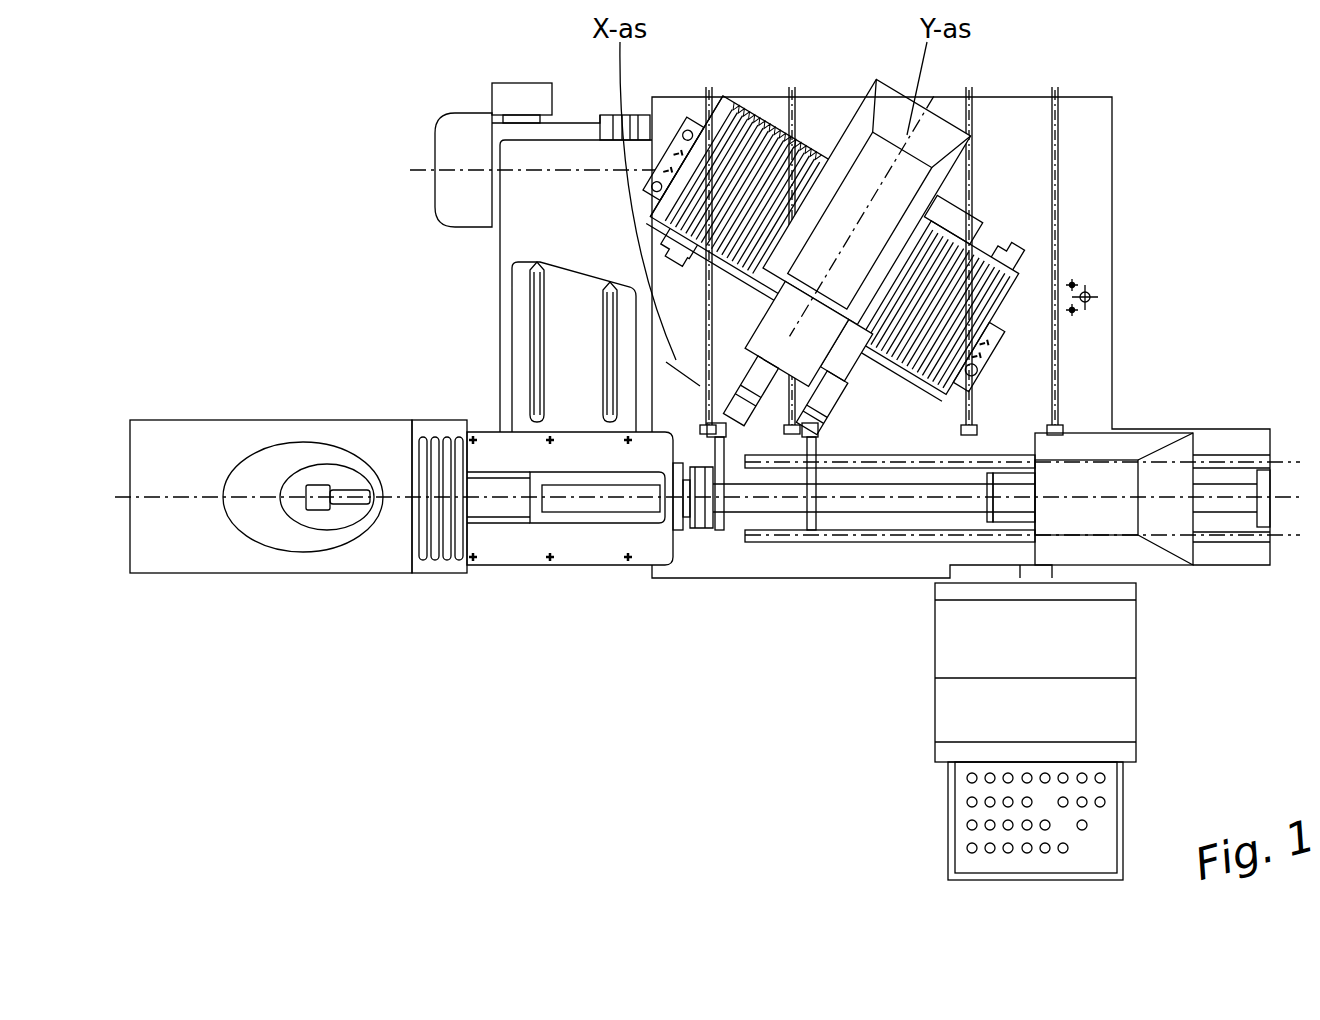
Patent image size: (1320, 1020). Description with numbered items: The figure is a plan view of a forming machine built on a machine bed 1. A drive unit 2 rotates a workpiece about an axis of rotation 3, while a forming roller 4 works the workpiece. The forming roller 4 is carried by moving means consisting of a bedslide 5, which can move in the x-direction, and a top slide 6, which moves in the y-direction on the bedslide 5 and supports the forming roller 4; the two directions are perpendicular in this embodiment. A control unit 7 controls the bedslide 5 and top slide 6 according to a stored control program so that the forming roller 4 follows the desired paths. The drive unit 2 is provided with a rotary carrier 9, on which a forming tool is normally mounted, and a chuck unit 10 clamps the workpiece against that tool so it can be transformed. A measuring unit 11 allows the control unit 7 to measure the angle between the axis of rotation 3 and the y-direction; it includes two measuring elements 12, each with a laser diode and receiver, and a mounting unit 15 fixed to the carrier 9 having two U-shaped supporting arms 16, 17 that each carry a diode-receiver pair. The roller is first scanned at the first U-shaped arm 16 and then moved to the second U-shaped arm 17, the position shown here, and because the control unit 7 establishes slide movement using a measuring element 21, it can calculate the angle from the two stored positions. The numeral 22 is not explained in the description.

The frame 1 is at (1093, 108).
The slide column 2 is at (497, 548).
The drive unit 3 is at (200, 497).
The guide rods 4 is at (735, 390).
The motor 5 is at (750, 118).
The slide housing 6 is at (887, 100).
The drive motor 7 is at (935, 722).
The support post 9 is at (695, 490).
The bearing block 10 is at (1183, 540).
The spindle shaft 11 is at (740, 507).
The support post 12 is at (802, 445).
The spindle axis 15 is at (763, 498).
The clamp nut 16 is at (728, 447).
The guide bars 17 is at (814, 447).
The cooling fins 21 is at (796, 135).
The cover 22 is at (823, 190).